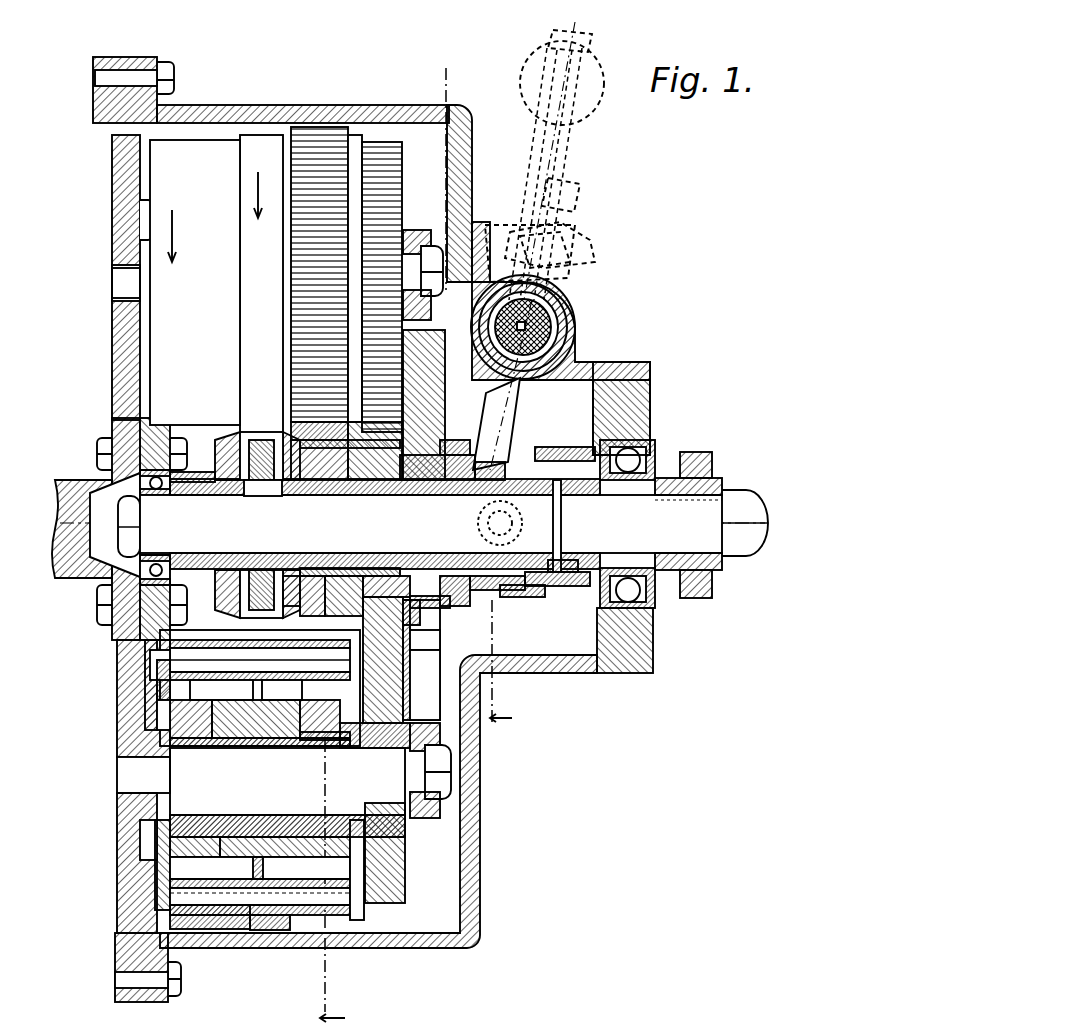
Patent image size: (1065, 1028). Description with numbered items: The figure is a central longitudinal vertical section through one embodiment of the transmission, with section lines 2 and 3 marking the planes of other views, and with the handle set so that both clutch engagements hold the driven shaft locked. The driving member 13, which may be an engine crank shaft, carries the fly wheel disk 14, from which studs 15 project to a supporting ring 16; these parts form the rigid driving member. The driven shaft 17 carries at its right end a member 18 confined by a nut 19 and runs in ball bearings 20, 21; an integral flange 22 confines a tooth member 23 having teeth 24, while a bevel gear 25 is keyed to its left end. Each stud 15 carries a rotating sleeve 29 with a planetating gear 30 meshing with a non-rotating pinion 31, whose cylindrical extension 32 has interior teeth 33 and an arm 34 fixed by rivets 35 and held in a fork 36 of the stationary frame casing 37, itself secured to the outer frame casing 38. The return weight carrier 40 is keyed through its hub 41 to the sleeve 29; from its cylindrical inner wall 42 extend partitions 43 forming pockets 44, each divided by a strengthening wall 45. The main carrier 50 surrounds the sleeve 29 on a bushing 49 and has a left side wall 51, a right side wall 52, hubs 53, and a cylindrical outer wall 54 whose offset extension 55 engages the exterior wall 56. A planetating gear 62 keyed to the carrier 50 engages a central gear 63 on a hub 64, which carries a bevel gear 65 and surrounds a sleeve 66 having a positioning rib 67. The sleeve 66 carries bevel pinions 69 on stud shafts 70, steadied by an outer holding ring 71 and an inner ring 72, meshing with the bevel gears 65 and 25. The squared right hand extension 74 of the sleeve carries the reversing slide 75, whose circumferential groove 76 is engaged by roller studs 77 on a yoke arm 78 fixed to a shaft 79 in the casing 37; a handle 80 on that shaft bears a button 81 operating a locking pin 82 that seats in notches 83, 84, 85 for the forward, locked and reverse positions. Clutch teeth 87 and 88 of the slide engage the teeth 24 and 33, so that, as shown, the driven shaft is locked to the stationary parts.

The section line 2- 2 is at (389, 537).
The section line 3- 3 is at (533, 376).
The driving member 13 is at (75, 485).
The fly wheel disk 14 is at (104, 233).
The studs 15 is at (128, 284).
The supporting ring 16 is at (410, 232).
The driven shaft 17 is at (431, 524).
The universal connection member 18 is at (705, 462).
The nut 19 is at (748, 495).
The ball bearing 20 is at (162, 500).
The ball bearing 21 is at (652, 470).
The integral flange 22 is at (561, 512).
The tooth member 23 is at (612, 566).
The teeth 24 is at (570, 562).
The bevel gear 25 is at (220, 462).
The rotating sleeve 29 is at (342, 748).
The planetating gear 30 is at (380, 152).
The non-rotating pinion 31 is at (405, 636).
The cylindrical extension 32 is at (445, 608).
The teeth 33 is at (418, 610).
The outwardly extending arm 34 is at (432, 418).
The rivets 35 is at (435, 436).
The fork 36 is at (570, 332).
The stationary frame casing 37 is at (605, 364).
The outer frame casing 38 is at (296, 108).
The return weight carrier 40 is at (168, 684).
The hub 41 is at (262, 715).
The cylindrical inner wall 42 is at (318, 707).
The partitions 43 is at (185, 680).
The pockets 44 is at (246, 688).
The strengthening wall 45 is at (220, 930).
The bushing 49 is at (212, 730).
The main carrier 50 is at (160, 694).
The left side wall 51 is at (160, 712).
The right side wall 52 is at (370, 680).
The hub 53 is at (200, 725).
The cylindrical outer wall 54 is at (235, 978).
The offset extension 55 is at (268, 960).
The cylindrical exterior wall 56 is at (355, 140).
The planetating gear 62 is at (315, 135).
The central gear 63 is at (345, 580).
The hub 64 is at (312, 566).
The bevel gear 65 is at (290, 574).
The sleeve 66 is at (318, 580).
The positioning rib 67 is at (420, 576).
The bevel pinions 69 is at (226, 438).
The stud shafts 70 is at (261, 475).
The outer holding ring 71 is at (256, 434).
The inner ring 72 is at (222, 476).
The right hand extension 74 is at (462, 492).
The reversing slide 75 is at (520, 598).
The circumferential groove 76 is at (498, 586).
The roller studs 77 is at (508, 524).
The yoke arm 78 is at (502, 385).
The shaft 79 is at (537, 356).
The handle 80 is at (565, 160).
The locking button 81 is at (585, 44).
The locking pin 82 is at (565, 218).
The notch 83 is at (514, 222).
The notch 84 is at (528, 190).
The notch 85 is at (580, 232).
The clutch teeth 87 is at (545, 588).
The clutch teeth 88 is at (460, 588).